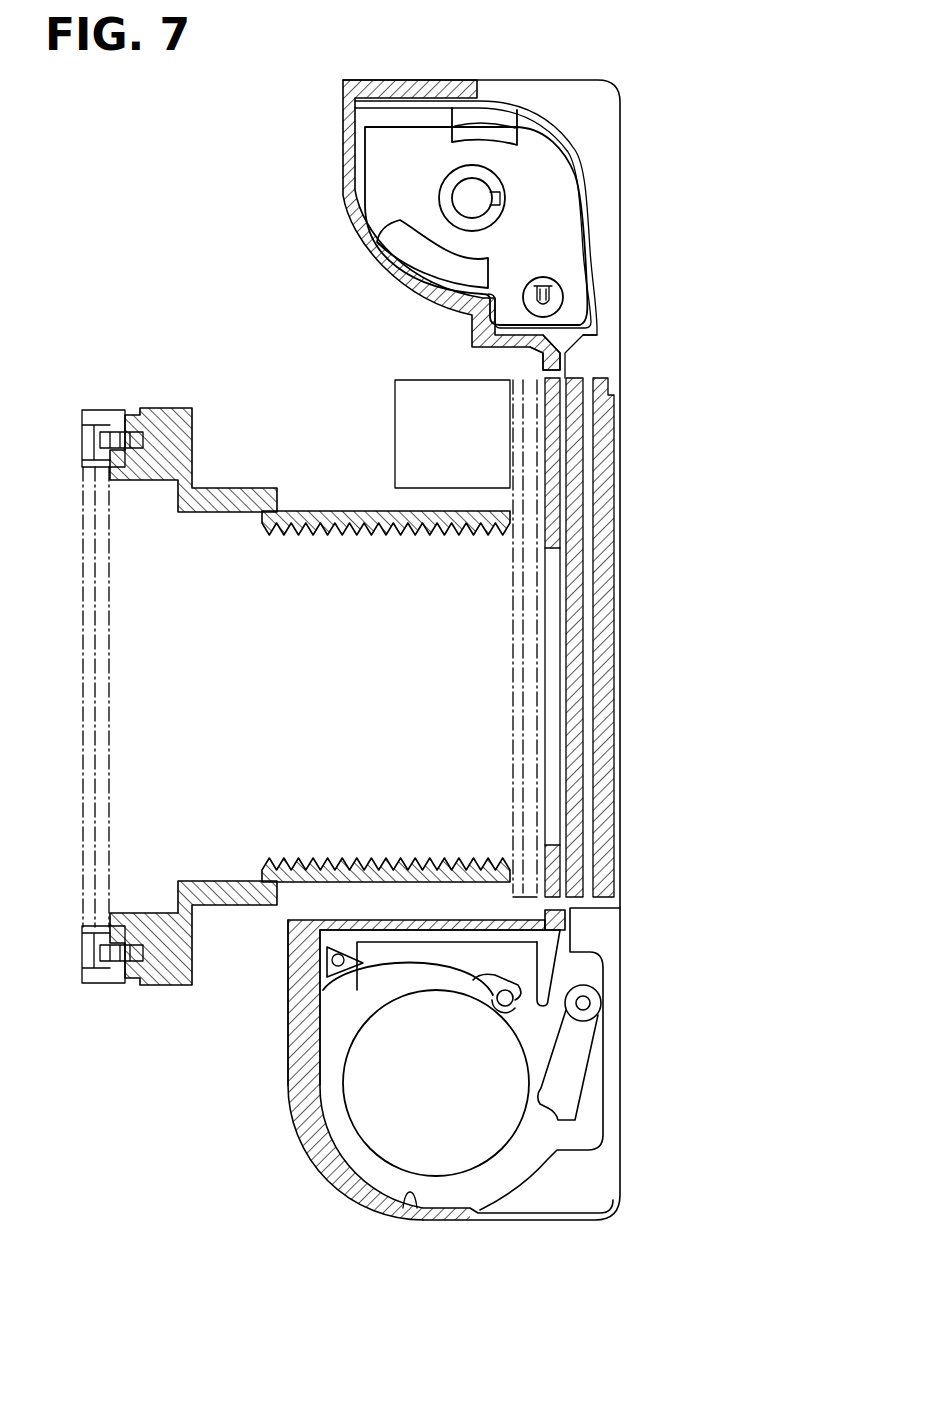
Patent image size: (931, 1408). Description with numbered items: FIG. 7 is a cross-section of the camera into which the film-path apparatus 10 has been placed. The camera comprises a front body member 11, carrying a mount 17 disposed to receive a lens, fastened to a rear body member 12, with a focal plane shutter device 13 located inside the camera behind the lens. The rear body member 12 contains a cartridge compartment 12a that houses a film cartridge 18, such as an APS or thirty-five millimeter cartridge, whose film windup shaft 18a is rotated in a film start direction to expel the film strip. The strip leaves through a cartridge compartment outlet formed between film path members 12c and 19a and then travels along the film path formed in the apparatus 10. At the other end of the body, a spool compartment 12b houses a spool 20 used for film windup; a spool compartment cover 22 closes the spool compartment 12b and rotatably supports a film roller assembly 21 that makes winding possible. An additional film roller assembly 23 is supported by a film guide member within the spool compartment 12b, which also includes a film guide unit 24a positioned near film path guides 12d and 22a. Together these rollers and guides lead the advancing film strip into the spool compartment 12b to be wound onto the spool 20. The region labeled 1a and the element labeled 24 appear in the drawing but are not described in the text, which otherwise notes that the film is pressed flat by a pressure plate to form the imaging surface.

The camera body front cover 1a is at (597, 125).
The cartridge compartment 12a is at (436, 80).
The film path member 12c is at (543, 364).
The film path member 19a is at (567, 352).
The film cartridge 18 is at (577, 270).
The film windup shaft 18a is at (478, 200).
The focal plane shutter device 13 is at (418, 418).
The apparatus 10 is at (587, 665).
The front body member 11 is at (175, 985).
The mount 17 is at (92, 985).
The rear body member 12 is at (613, 1207).
The film take-up chamber wall 24 is at (288, 940).
The spool compartment 12b is at (408, 1205).
The film path guide 12d is at (567, 926).
The spool compartment cover 22 is at (605, 960).
The film path guide 22a is at (548, 967).
The film guide unit 24a is at (603, 965).
The film roller assembly 21 is at (570, 1055).
The spool 20 is at (495, 1150).
The film roller assembly 23 is at (427, 977).